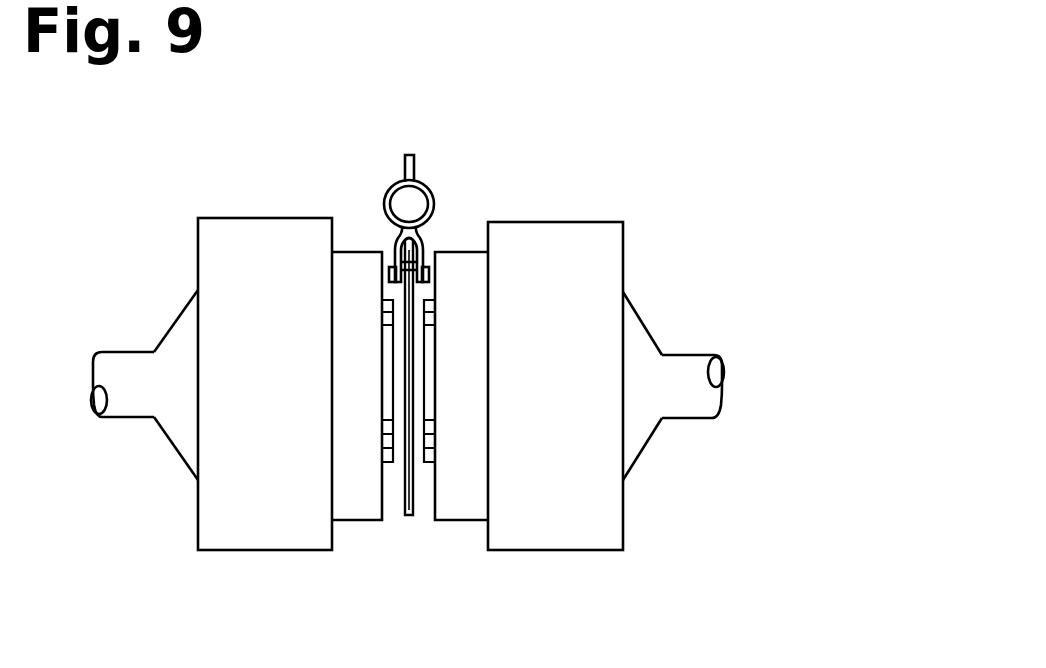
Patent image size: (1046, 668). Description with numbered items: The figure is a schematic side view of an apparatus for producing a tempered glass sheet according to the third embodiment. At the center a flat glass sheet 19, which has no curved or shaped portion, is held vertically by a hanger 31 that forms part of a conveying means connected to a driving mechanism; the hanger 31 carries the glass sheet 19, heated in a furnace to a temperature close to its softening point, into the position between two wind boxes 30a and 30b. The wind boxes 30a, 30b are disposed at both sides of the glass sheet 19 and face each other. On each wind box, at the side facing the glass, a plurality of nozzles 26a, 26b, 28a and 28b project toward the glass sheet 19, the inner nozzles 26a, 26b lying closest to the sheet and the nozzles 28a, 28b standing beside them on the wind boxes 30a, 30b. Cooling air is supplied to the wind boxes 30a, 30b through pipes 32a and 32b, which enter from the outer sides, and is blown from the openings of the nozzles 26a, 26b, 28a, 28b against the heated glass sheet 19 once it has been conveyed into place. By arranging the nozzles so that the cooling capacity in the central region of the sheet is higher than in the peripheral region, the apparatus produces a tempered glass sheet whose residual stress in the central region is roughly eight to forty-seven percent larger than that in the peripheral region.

The glass sheet 19 is at (408, 514).
The nozzle 26a is at (387, 382).
The nozzle 26b is at (433, 382).
The nozzle 28a is at (360, 520).
The nozzle 28b is at (457, 520).
The wind box 30a is at (207, 502).
The wind box 30b is at (598, 510).
The hanger 31 is at (430, 188).
The pipe 32a is at (117, 352).
The pipe 32b is at (693, 360).